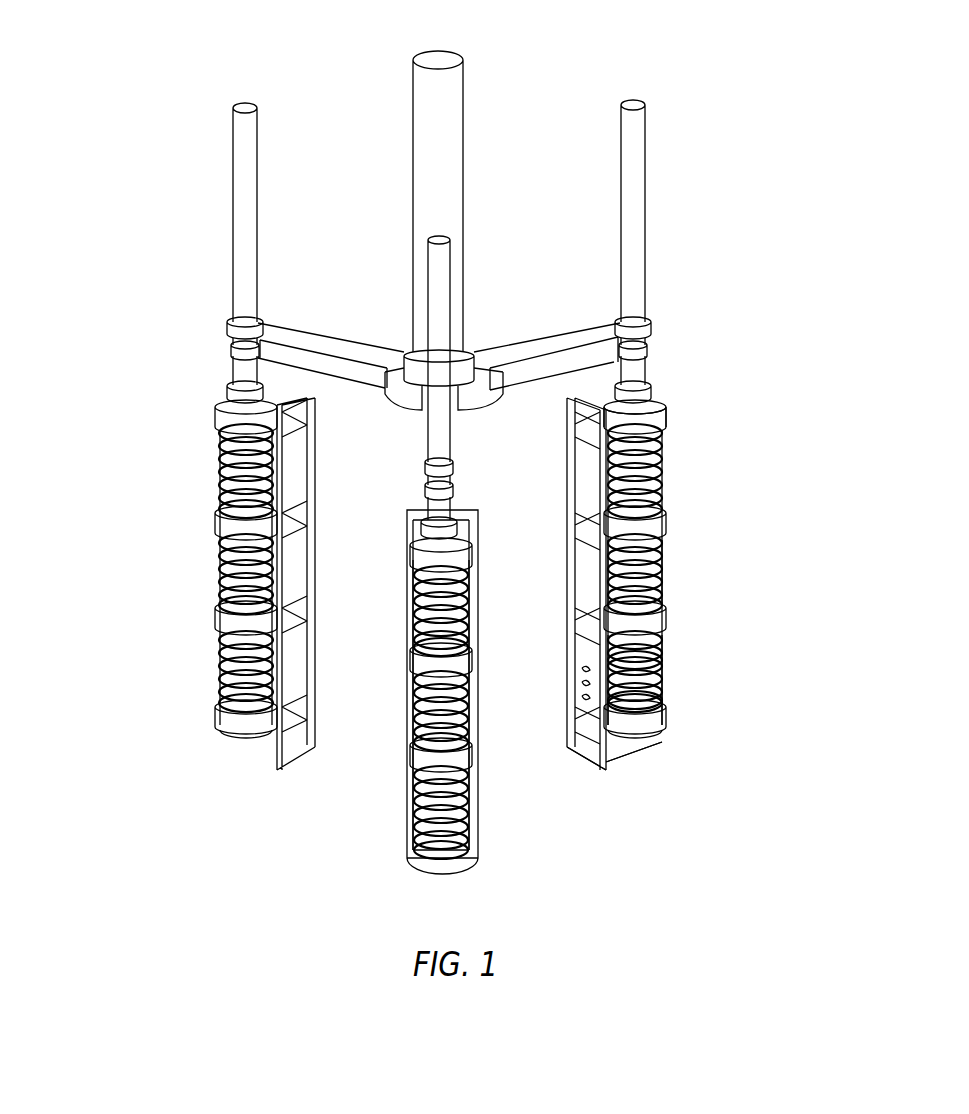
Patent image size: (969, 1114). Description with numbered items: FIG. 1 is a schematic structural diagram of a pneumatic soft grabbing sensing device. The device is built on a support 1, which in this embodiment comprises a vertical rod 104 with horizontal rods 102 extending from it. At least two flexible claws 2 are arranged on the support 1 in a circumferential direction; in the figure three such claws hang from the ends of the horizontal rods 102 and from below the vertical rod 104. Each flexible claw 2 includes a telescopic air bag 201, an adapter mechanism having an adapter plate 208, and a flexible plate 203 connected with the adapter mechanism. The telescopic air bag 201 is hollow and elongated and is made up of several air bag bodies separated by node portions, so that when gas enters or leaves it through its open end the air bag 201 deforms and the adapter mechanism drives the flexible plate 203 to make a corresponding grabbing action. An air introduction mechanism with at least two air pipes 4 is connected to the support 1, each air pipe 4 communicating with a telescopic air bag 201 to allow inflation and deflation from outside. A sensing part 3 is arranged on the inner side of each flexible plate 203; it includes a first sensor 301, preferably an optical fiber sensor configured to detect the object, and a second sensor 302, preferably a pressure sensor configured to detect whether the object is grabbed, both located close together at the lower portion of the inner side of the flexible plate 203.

The support 1 is at (513, 285).
The vertical rod 104 is at (430, 128).
The horizontal rod 102 is at (303, 333).
The air pipe 4 is at (437, 277).
The flexible claw 2 is at (225, 590).
The adapter plate 208 is at (660, 410).
The telescopic air bag 201 is at (660, 590).
The sensing part 3 is at (807, 638).
The first sensor 301 is at (660, 667).
The second sensor 302 is at (655, 700).
The flexible plate 203 is at (608, 760).